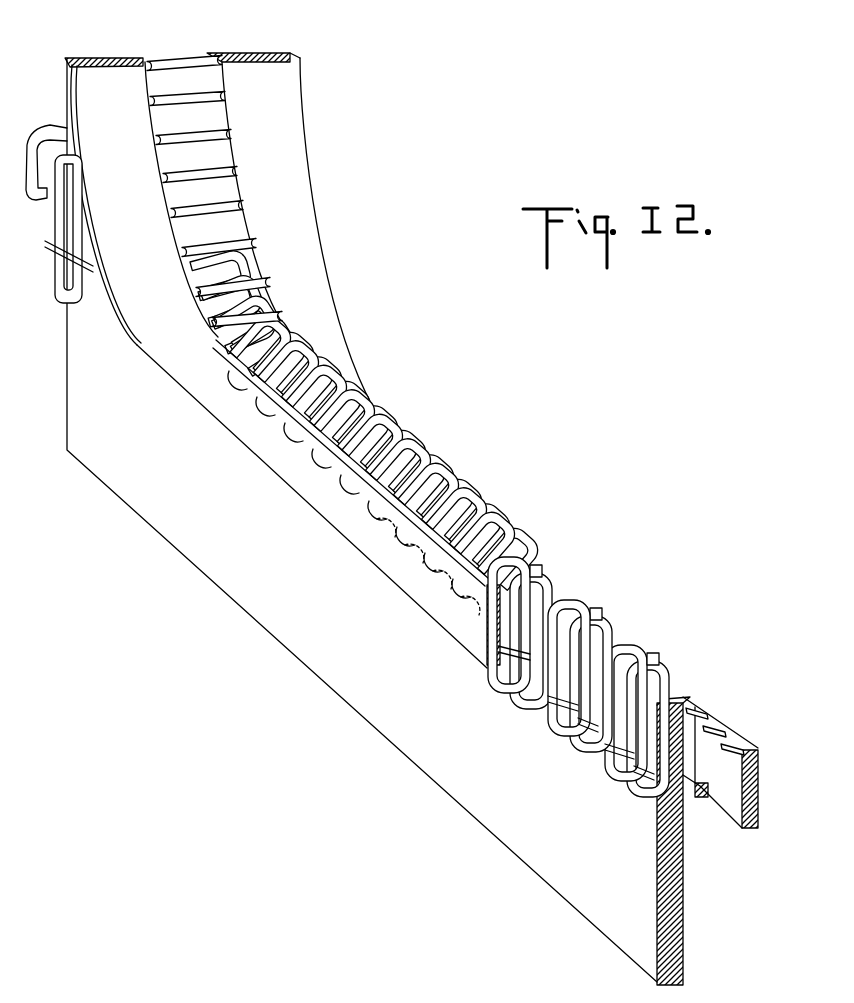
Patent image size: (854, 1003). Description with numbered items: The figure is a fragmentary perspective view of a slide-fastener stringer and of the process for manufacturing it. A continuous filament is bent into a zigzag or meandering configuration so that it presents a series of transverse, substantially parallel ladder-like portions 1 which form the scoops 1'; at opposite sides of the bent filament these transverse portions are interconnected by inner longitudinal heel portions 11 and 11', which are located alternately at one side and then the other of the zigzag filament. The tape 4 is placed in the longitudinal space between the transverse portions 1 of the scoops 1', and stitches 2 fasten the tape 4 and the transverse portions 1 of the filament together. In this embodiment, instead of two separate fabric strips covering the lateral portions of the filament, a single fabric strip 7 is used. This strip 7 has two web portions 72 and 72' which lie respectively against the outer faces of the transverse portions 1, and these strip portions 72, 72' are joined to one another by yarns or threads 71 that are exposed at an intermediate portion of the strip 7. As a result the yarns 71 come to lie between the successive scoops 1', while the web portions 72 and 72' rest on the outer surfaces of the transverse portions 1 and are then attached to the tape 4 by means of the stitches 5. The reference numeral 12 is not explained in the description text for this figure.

The transverse ladder-like portions 1 is at (568, 677).
The scoops 1' is at (601, 642).
The stitches 2 is at (608, 755).
The tape 4 is at (305, 643).
The stitches 5 is at (428, 561).
The fabric strip 7 is at (351, 274).
The inner longitudinal heel portions 11 is at (561, 678).
The inner longitudinal heel portions 11' is at (720, 776).
The clips 12 is at (410, 447).
The yarns or threads 71 is at (185, 97).
The web portion of fabric strip 72 is at (256, 185).
The web portion of fabric strip 72' is at (275, 304).